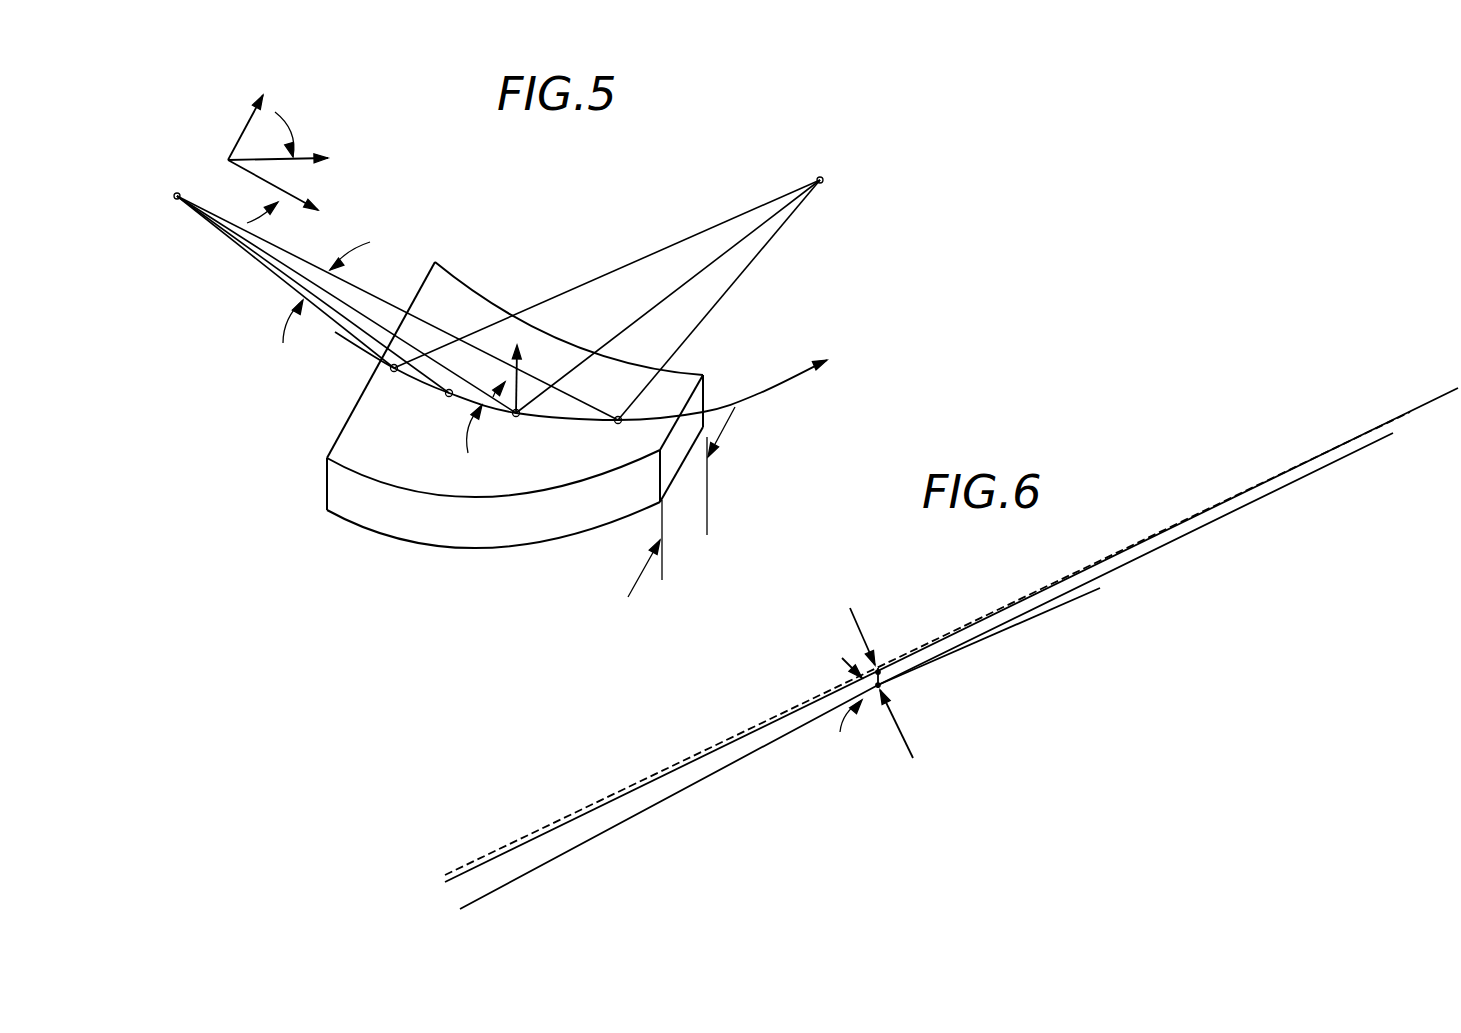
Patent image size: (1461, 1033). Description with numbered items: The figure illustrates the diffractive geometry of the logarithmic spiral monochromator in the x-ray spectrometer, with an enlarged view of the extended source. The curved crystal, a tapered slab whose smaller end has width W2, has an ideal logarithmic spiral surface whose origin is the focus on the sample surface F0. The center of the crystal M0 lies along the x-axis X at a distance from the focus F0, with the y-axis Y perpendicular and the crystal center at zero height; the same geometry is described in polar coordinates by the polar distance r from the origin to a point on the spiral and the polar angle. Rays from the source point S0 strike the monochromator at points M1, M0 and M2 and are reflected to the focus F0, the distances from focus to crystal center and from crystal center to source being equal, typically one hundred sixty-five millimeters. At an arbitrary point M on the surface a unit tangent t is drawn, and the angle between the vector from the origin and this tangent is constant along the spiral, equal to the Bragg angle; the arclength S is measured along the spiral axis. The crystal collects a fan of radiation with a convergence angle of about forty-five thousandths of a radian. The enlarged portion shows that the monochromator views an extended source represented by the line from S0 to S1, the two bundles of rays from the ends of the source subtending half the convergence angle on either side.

In FIG. 5, the focus on sample surface F0 is at (382, 290).
In FIG. 5, the x-ray source point S0 is at (624, 284).
In FIG. 6, the x-ray source point S0 is at (890, 670).
In FIG. 6, the x-ray source end point S1 is at (885, 687).
In FIG. 5, the monochromator surface point M1 is at (396, 394).
In FIG. 5, the arbitrary point on monochromator surface M is at (446, 413).
In FIG. 5, the center of monochromator crystal M0 is at (516, 431).
In FIG. 5, the monochromator surface point M2 is at (609, 437).
In FIG. 5, the unit tangent t is at (518, 377).
In FIG. 5, the arclength along logarithmic spiral S is at (595, 376).
In FIG. 5, the width of crystal at smaller end W2 is at (681, 502).
In FIG. 5, the x-axis X is at (285, 194).
In FIG. 5, the y-axis Y is at (250, 110).
In FIG. 5, the polar distance r is at (289, 159).